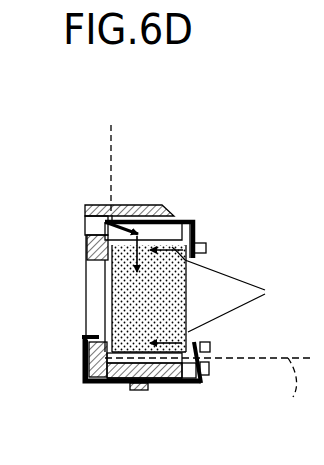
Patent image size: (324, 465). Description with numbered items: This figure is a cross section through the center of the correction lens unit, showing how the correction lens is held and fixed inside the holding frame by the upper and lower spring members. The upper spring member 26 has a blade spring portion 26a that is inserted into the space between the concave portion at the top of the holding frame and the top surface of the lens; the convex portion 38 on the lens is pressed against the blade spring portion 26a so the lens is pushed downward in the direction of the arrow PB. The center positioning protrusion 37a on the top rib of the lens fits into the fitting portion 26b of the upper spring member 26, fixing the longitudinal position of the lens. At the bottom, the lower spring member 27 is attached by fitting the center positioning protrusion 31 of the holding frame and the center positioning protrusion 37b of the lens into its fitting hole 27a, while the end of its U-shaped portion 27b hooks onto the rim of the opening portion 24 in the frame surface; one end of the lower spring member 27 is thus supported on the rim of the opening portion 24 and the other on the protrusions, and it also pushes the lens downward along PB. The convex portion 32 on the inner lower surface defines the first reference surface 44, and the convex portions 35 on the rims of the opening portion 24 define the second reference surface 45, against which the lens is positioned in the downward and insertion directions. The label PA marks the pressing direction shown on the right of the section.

The second reference surface 45 is at (113, 141).
The opening portion 24 is at (93, 317).
The convex portion 38 is at (87, 240).
The convex portions 35 is at (105, 268).
The arrow PB is at (146, 247).
The pressure chamber A PA is at (235, 289).
The upper spring member 26 is at (193, 221).
The blade spring portion 26a is at (127, 222).
The fitting portion 26b is at (196, 232).
The center positioning protrusion 37a is at (206, 248).
The center positioning protrusion 37b is at (206, 344).
The lower spring member 27 is at (193, 385).
The fitting hole 27a is at (211, 351).
The U-shaped portion 27b is at (82, 371).
The center positioning protrusion 31 is at (209, 368).
The convex portion 32 is at (122, 384).
The first reference surface 44 is at (299, 390).